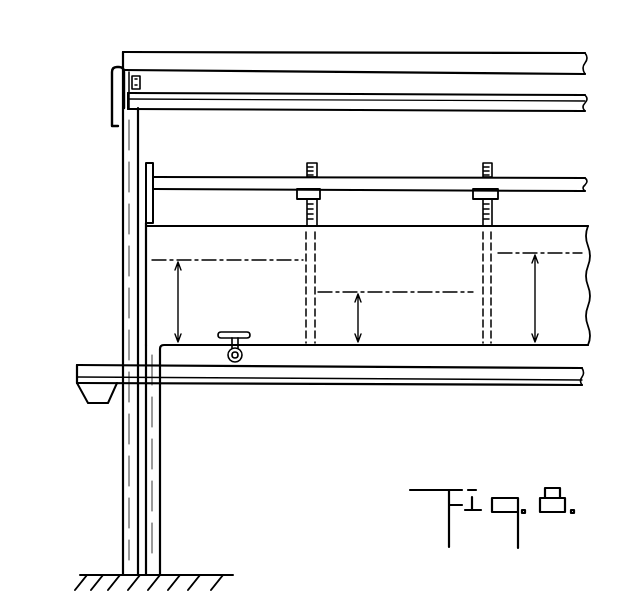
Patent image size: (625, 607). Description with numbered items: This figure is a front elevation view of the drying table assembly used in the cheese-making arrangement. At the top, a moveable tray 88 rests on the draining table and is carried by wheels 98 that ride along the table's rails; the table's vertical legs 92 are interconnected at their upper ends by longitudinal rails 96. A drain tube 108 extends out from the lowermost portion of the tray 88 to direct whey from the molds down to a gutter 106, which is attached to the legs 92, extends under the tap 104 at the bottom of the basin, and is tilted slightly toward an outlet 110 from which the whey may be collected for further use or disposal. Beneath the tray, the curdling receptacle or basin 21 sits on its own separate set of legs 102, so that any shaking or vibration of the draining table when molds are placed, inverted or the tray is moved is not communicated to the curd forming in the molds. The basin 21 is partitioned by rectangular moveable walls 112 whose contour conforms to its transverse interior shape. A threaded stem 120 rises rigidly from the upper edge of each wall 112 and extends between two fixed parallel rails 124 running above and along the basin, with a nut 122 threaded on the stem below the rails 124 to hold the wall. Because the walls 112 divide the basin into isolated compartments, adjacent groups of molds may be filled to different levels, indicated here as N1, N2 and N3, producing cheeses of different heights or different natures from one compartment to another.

The moveable tray 88 is at (188, 57).
The drain tube 108 is at (110, 108).
The wheels 98 is at (141, 89).
The longitudinal rails 96 is at (306, 111).
The legs 92 is at (124, 180).
The fixed parallel rails 124 is at (243, 176).
The threaded stem 120 is at (319, 169).
The nut 122 is at (297, 197).
The receptacle or basin 21 is at (426, 224).
The moveable walls 112 is at (322, 277).
The tap 104 is at (240, 333).
The gutter 106 is at (77, 366).
The outlet 110 is at (88, 398).
The legs 102 is at (160, 498).
The fill level N1 is at (227, 301).
The fill level N2 is at (395, 317).
The fill level N3 is at (540, 297).